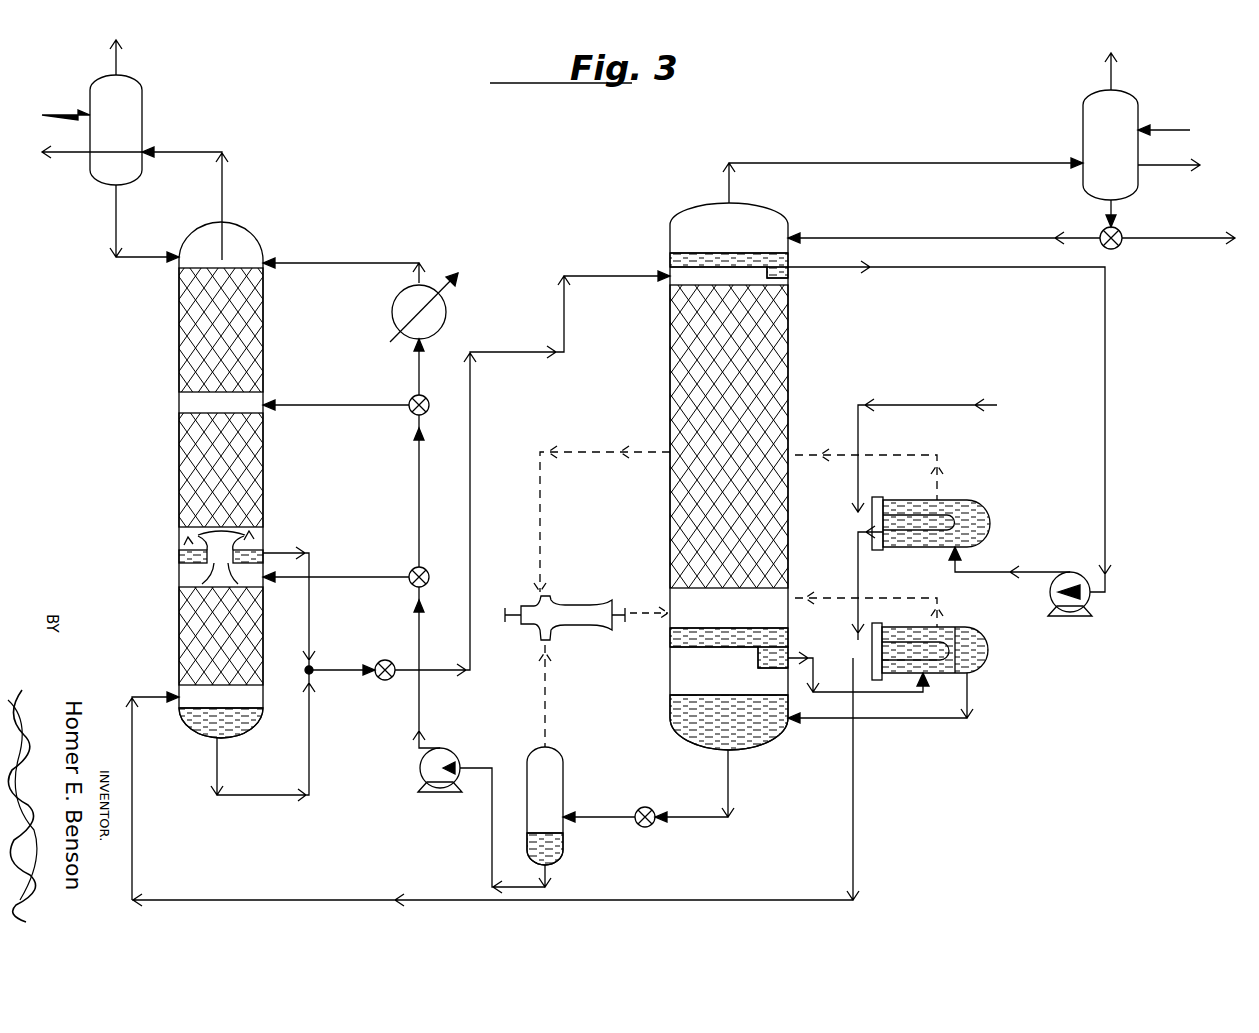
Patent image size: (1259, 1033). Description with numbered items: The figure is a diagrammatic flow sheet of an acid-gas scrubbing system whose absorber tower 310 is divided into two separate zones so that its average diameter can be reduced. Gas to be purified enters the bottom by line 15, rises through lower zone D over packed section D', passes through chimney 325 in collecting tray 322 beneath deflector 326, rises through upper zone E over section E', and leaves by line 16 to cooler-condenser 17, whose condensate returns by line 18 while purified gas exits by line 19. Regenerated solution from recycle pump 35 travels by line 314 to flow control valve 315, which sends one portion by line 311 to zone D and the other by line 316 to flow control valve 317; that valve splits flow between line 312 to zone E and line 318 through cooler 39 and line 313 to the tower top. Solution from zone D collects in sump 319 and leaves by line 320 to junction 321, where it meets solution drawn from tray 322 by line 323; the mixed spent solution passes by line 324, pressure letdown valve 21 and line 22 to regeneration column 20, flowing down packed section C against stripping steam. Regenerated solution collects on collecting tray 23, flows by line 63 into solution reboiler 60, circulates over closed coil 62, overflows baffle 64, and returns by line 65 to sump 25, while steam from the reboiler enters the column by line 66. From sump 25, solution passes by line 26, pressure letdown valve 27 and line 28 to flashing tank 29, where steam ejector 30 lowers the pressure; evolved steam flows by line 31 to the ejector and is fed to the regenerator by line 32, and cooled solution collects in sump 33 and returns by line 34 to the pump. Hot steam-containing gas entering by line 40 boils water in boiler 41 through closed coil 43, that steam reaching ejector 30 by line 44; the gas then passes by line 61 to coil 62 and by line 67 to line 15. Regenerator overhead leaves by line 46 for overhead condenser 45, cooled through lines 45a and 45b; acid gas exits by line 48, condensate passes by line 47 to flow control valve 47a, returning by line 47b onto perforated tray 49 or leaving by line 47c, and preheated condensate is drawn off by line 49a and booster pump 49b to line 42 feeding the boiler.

The line 15 is at (150, 696).
The line 16 is at (222, 178).
The cooler-condenser 17 is at (128, 105).
The line 18 is at (112, 205).
The line 19 is at (119, 60).
The regeneration column 20 is at (723, 484).
The pressure letdown valve 21 is at (385, 682).
The line 22 is at (473, 660).
The collecting tray 23 is at (728, 648).
The sump 25 is at (750, 725).
The line 26 is at (732, 797).
The pressure letdown valve 27 is at (648, 828).
The line 28 is at (605, 817).
The flashing tank 29 is at (555, 765).
The steam ejector 30 is at (590, 595).
The line 31 is at (548, 690).
The line 32 is at (640, 602).
The sump 33 is at (550, 852).
The line 34 is at (490, 818).
The recycle pump 35 is at (424, 766).
The cooler 39 is at (400, 293).
The line 40 is at (925, 402).
The boiler 41 is at (934, 521).
The line 42 is at (995, 570).
The closed coil 43 is at (920, 550).
The line 44 is at (550, 505).
The overhead condenser 45 is at (1098, 127).
The line 45a is at (1170, 128).
The line 45b is at (1165, 172).
The line 46 is at (850, 162).
The line 47 is at (1104, 207).
The flow control valve 47a is at (1118, 248).
The line 47b is at (945, 235).
The line 47c is at (1205, 246).
The line 48 is at (1107, 73).
The perforated tray 49 is at (700, 262).
The line 49a is at (1040, 275).
The booster pump 49b is at (1075, 575).
The solution reboiler 60 is at (955, 654).
The line 61 is at (855, 568).
The closed coil 62 is at (938, 672).
The line 63 is at (905, 698).
The baffle 64 is at (985, 650).
The line 65 is at (970, 705).
The line 66 is at (900, 598).
The line 67 is at (855, 845).
The absorber tower 310 is at (209, 489).
The line 311 is at (352, 578).
The line 312 is at (330, 402).
The line 313 is at (310, 262).
The line 314 is at (414, 640).
The flow control valve 315 is at (416, 566).
The line 316 is at (415, 484).
The flow control valve 317 is at (412, 413).
The line 318 is at (415, 384).
The sump 319 is at (228, 720).
The line 320 is at (250, 797).
The junction 321 is at (312, 662).
The collecting tray 322 is at (190, 570).
The line 323 is at (292, 555).
The line 324 is at (336, 676).
The chimney 325 is at (196, 589).
The deflector 326 is at (215, 527).
The cross-hatched section C is at (760, 355).
The lower zone D is at (138, 633).
The cross-hatched section D' is at (245, 636).
The upper zone E is at (129, 391).
The section E' is at (252, 470).